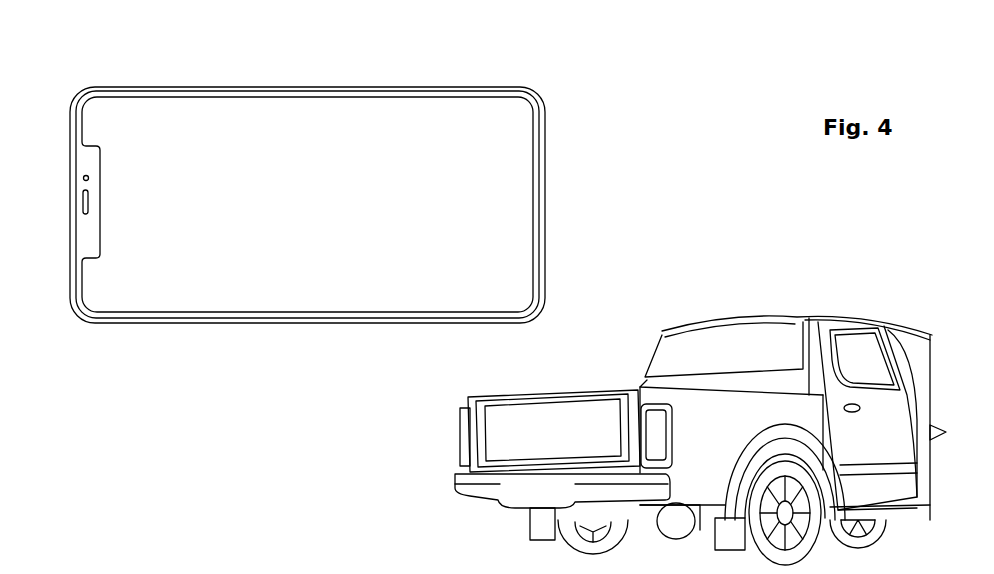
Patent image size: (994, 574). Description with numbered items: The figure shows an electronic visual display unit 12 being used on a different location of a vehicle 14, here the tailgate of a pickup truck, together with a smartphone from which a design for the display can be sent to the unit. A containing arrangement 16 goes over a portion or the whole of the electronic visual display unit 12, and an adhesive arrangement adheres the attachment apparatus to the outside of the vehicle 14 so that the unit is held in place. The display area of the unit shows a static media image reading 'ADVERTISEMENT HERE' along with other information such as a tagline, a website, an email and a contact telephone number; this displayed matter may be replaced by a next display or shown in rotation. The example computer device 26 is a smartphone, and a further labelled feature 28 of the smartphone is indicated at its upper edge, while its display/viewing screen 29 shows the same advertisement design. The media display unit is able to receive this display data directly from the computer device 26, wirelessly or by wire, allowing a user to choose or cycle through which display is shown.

The electronic visual display unit 12 is at (487, 438).
The vehicle 14 is at (646, 303).
The containing arrangement 16 is at (480, 420).
The computer device 26 is at (81, 86).
The mobile device screen 28 is at (298, 88).
The display/viewing screen 29 is at (235, 267).